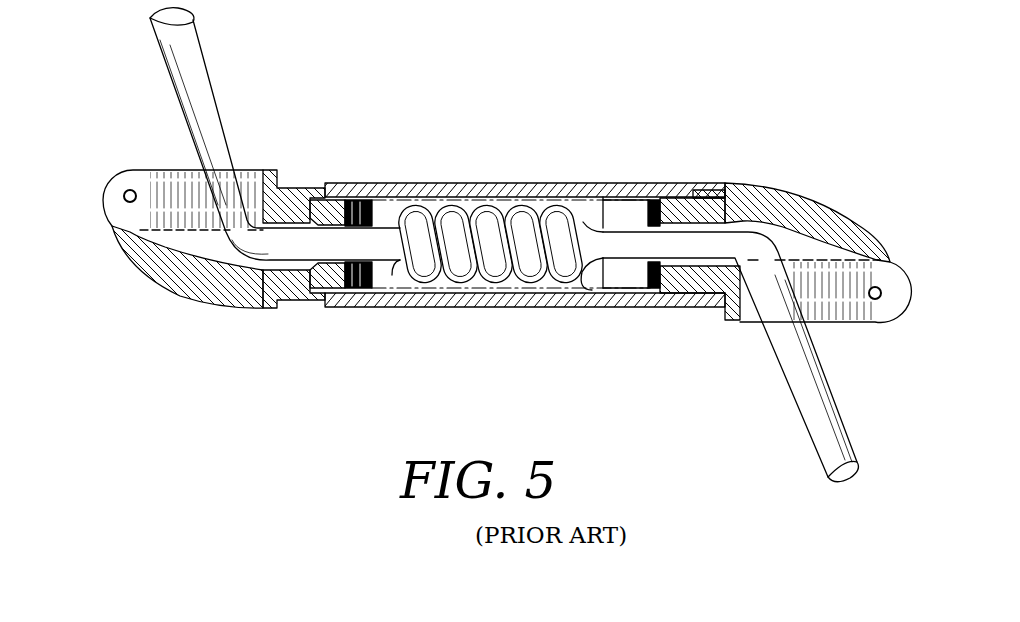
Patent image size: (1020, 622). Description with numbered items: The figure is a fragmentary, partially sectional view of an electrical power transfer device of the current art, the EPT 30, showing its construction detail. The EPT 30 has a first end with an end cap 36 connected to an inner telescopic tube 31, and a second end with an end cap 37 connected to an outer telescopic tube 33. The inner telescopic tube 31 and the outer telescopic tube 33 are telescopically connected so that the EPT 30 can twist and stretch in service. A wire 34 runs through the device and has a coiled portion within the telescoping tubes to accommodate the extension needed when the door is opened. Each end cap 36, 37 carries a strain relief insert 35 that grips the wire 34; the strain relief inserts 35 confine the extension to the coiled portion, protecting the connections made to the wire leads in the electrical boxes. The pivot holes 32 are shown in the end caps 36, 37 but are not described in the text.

The EPT 30 is at (403, 330).
The inner telescopic tube 31 is at (300, 196).
The pivot hole 32 is at (130, 205).
The outer telescopic tube 33 is at (522, 308).
The wire 34 is at (467, 230).
The strain relief insert 35 is at (200, 282).
The end cap 36 is at (147, 175).
The end cap 37 is at (862, 322).